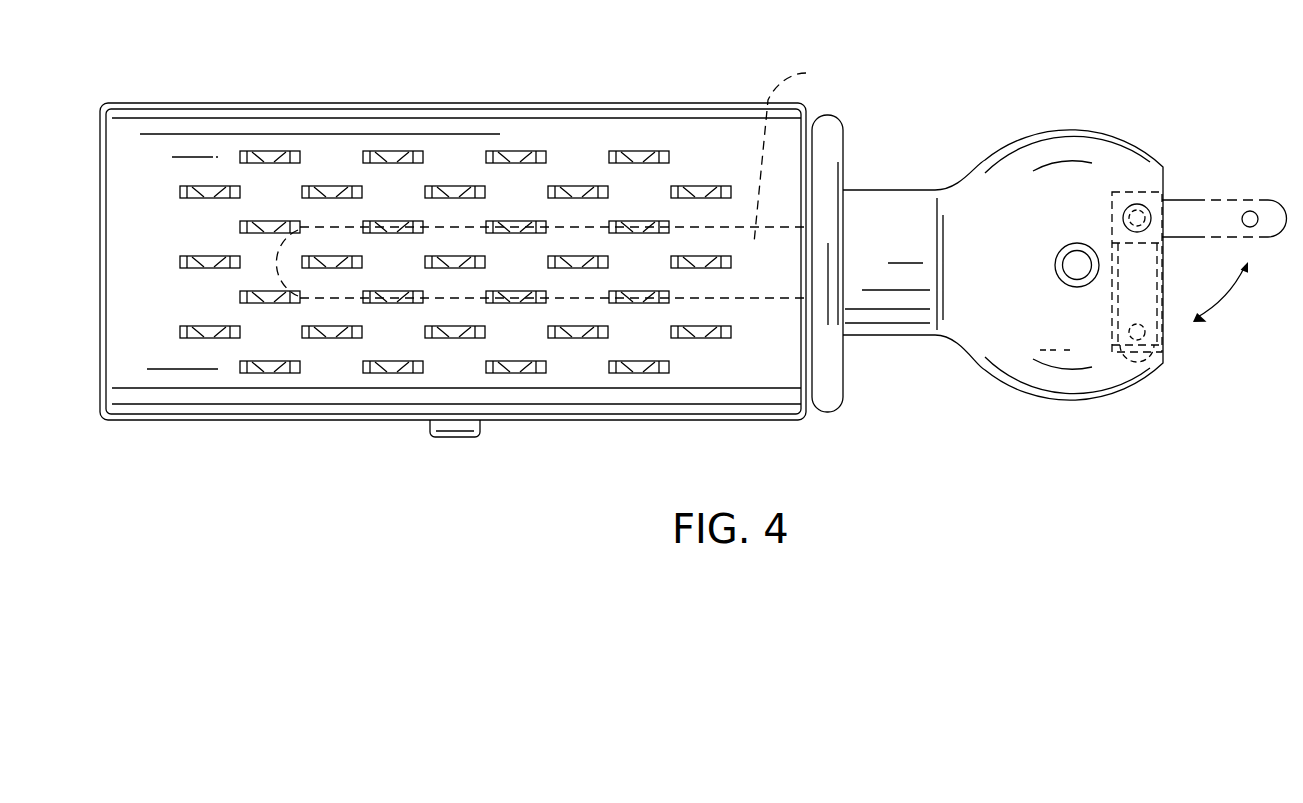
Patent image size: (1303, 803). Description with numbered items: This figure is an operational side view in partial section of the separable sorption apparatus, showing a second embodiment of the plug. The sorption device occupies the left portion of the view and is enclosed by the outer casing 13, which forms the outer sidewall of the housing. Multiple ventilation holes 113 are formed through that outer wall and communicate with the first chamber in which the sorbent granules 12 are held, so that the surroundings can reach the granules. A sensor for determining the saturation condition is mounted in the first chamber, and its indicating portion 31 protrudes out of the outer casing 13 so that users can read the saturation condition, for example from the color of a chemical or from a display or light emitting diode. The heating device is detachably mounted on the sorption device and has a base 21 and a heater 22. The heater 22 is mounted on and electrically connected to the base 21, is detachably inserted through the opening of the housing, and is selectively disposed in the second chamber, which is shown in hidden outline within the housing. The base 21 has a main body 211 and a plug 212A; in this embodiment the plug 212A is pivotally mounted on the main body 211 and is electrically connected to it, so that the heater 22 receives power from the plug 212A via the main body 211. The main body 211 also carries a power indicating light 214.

The ventilation holes 113 is at (400, 157).
The sorbent granules 12 is at (521, 155).
The outer casing 13 is at (624, 125).
The heater 22 is at (557, 181).
The base 21 is at (1078, 108).
The plug 212A is at (1187, 218).
The power indicating light 214 is at (1077, 265).
The main body 211 is at (1067, 358).
The indicating portion 31 is at (453, 425).